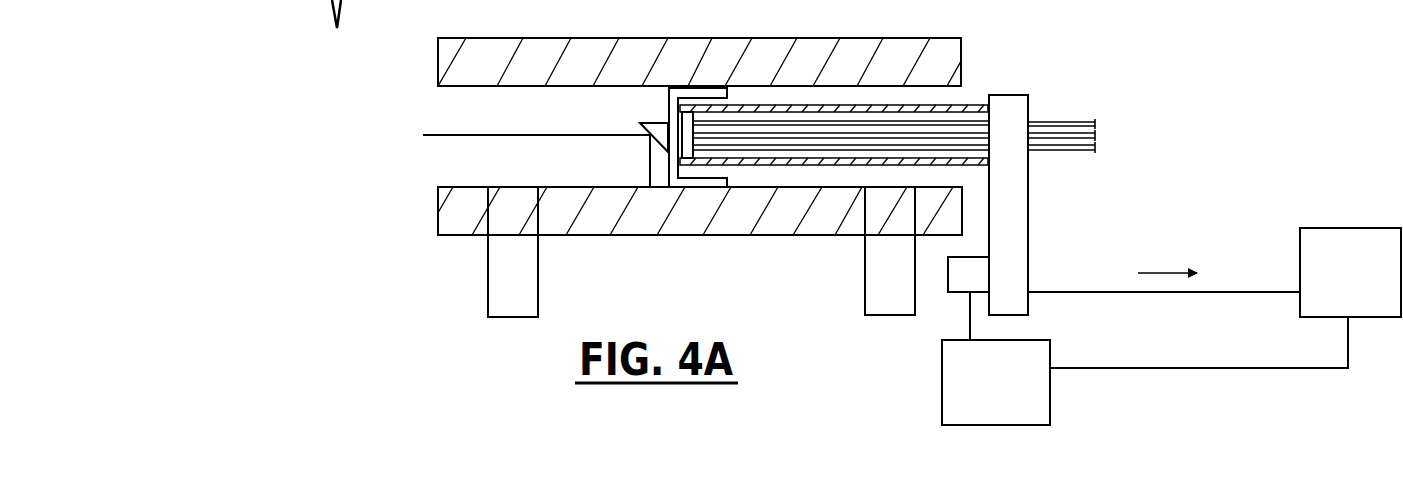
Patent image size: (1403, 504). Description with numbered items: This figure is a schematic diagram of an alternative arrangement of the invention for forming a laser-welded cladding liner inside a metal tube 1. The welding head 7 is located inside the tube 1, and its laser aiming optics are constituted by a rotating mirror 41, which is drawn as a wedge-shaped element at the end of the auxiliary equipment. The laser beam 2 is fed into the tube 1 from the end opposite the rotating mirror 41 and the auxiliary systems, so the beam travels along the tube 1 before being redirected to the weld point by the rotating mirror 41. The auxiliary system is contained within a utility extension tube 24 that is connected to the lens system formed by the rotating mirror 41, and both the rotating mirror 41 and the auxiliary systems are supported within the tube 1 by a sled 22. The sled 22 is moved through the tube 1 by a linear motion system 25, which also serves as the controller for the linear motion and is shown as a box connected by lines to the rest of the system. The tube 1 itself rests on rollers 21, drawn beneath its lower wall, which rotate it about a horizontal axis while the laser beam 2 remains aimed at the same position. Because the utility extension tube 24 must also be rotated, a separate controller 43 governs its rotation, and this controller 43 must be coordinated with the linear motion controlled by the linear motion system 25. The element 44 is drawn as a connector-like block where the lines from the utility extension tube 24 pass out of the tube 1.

The tube 1 is at (552, 50).
The laser beam 2 is at (512, 136).
The welding head 7 is at (650, 183).
The rollers 21 is at (503, 262).
The sled 22 is at (690, 87).
The utility extension tube 24 is at (830, 107).
The linear motion system 25 is at (1315, 245).
The rotating mirror 41 is at (633, 124).
The controller 43 is at (963, 363).
The connector block 44 is at (1027, 97).